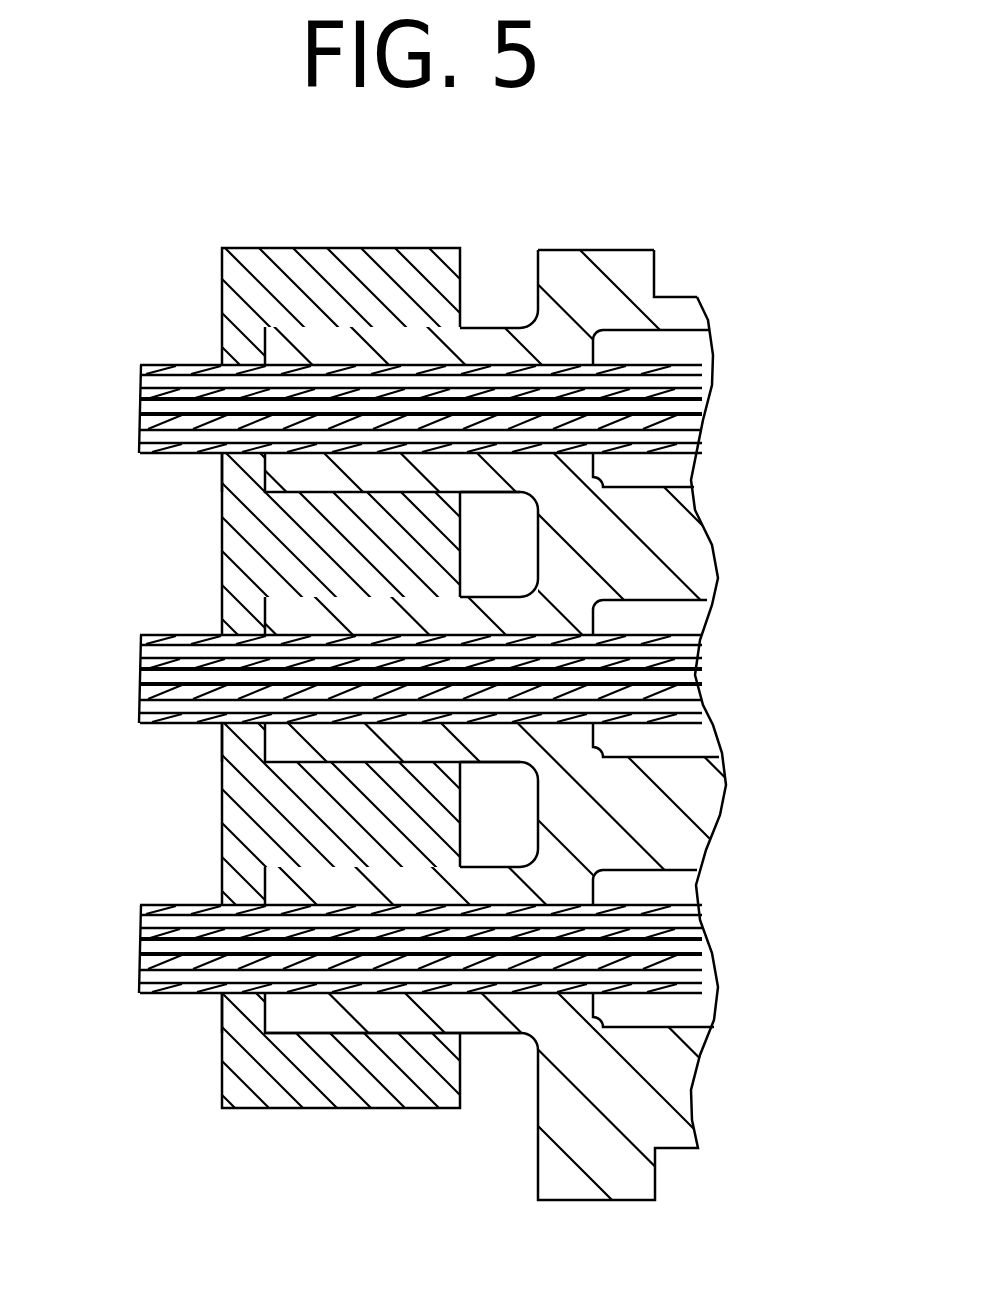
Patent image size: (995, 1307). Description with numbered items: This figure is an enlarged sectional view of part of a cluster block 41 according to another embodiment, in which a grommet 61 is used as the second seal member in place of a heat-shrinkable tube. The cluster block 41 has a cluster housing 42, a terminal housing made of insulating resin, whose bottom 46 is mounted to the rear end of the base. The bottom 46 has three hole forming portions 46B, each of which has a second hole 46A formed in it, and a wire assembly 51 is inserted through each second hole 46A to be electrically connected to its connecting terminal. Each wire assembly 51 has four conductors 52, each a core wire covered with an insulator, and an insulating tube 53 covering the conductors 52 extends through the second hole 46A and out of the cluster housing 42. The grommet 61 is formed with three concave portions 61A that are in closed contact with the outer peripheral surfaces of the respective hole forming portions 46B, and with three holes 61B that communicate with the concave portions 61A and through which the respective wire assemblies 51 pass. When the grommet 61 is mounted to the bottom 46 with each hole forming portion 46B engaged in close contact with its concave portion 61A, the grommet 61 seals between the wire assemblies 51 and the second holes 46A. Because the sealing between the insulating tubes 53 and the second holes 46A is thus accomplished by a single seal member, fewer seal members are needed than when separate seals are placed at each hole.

The cluster block 41 is at (497, 705).
The cluster housing 42 is at (684, 296).
The bottom 46 is at (497, 705).
The second hole 46A is at (347, 372).
The hole forming portion 46B is at (416, 338).
The wire assembly 51 is at (376, 632).
The conductor 52 is at (142, 423).
The insulating tube 53 is at (184, 364).
The grommet 61 is at (276, 248).
The concave portion 61A is at (466, 340).
The hole 61B is at (235, 453).